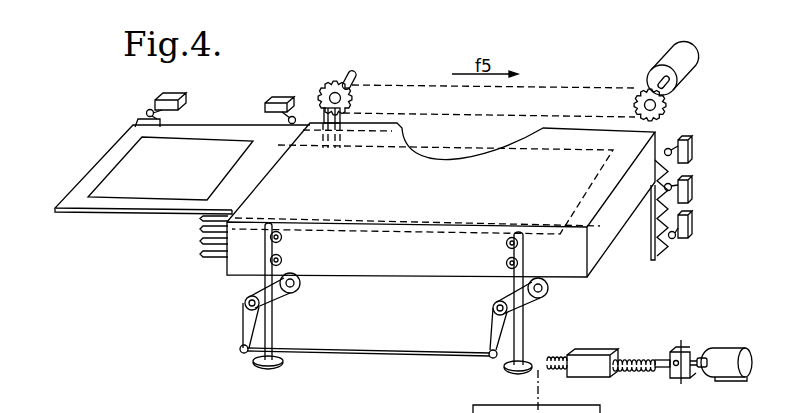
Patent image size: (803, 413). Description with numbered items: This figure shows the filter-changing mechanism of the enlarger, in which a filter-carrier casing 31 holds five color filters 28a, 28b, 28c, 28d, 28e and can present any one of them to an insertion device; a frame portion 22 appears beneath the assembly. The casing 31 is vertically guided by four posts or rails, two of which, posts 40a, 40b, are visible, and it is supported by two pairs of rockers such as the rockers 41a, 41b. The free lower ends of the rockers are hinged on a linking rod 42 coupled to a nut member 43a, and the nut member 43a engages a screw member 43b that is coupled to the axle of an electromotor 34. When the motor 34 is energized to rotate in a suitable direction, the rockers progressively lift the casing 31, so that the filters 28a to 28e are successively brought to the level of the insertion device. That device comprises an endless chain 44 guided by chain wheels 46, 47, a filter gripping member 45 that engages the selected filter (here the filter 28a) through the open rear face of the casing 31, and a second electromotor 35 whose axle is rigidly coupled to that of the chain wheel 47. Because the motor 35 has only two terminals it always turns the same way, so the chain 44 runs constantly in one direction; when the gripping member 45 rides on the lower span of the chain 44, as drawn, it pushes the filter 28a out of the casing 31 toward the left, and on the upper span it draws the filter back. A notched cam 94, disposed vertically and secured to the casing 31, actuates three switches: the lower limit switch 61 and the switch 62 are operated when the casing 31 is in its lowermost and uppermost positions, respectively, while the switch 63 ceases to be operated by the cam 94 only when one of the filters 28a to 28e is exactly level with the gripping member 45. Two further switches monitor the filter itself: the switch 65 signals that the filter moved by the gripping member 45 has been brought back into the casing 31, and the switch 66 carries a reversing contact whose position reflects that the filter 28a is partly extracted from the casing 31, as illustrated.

The base frame 22 is at (563, 412).
The color filter 28a is at (93, 207).
The color filter 28b is at (207, 217).
The color filter 28c is at (203, 233).
The color filter 28d is at (203, 242).
The color filter 28e is at (202, 253).
The filter-carrier casing 31 is at (349, 267).
The electromotor 34 is at (728, 369).
The electromotor 35 is at (657, 57).
The post or rail 40a is at (265, 247).
The post or rail 40b is at (522, 253).
The rocker 41a is at (242, 328).
The rocker 41b is at (492, 333).
The linking rod 42 is at (325, 348).
The nut member 43a is at (583, 355).
The screw member 43b is at (645, 347).
The endless chain 44 is at (397, 85).
The filter gripping member 45 is at (341, 113).
The chain wheel 46 is at (328, 90).
The chain wheel 47 is at (634, 104).
The lower limit switch 61 is at (690, 240).
The switch 62 is at (692, 153).
The switch 63 is at (692, 192).
The switch 65 is at (273, 97).
The switch 66 is at (158, 97).
The notched cam 94 is at (658, 233).